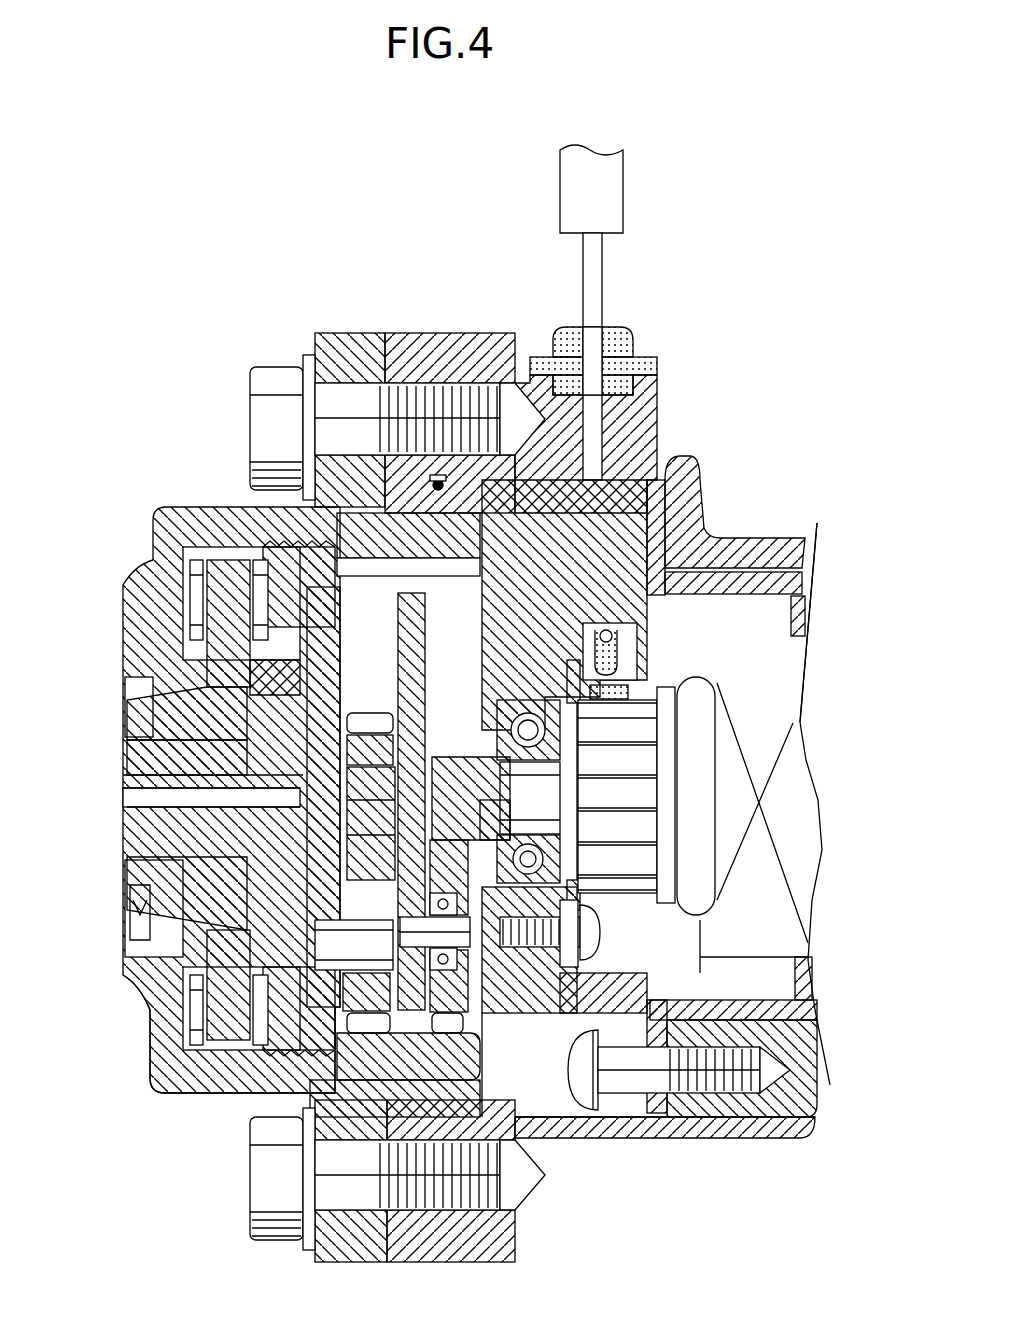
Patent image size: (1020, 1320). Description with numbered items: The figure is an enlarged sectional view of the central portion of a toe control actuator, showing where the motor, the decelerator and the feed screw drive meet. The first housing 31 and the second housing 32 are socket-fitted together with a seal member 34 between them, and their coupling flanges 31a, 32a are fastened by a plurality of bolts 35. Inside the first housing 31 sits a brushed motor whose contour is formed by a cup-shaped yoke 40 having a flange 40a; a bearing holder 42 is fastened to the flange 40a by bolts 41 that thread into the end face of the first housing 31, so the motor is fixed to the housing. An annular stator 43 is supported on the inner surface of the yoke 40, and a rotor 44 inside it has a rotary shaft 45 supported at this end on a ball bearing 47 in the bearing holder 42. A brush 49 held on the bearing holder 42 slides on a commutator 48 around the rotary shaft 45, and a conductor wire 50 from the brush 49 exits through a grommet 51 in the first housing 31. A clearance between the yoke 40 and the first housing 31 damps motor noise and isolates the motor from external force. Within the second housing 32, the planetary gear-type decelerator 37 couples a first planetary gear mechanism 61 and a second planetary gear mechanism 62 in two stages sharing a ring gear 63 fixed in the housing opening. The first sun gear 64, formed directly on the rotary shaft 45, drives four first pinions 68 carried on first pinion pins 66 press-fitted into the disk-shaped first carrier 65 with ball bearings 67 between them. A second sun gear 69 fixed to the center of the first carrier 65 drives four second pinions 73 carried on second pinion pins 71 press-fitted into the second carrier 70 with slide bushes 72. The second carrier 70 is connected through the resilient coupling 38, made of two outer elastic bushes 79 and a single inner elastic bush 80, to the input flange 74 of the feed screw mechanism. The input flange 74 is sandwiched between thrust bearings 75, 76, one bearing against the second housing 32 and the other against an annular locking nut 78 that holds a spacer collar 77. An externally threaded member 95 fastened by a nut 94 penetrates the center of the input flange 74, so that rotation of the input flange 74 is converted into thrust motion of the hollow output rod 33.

The first housing 31 is at (768, 528).
The coupling flange 31a is at (427, 343).
The second housing 32 is at (150, 538).
The coupling flange 32a is at (358, 343).
The output rod 33 is at (150, 940).
The seal member 34 is at (440, 480).
The bolt 35 is at (276, 365).
The planetary gear-type decelerator 37 is at (492, 1092).
The coupling 38 is at (265, 548).
The yoke 40 is at (746, 576).
The flange 40a is at (660, 480).
The bolt 41 is at (625, 1082).
The bearing holder 42 is at (484, 1074).
The stator 43 is at (793, 620).
The rotor 44 is at (795, 690).
The rotary shaft 45 is at (548, 810).
The ball bearing 47 is at (515, 712).
The commutator 48 is at (622, 882).
The brush 49 is at (630, 692).
The conductor wire 50 is at (602, 278).
The grommet 51 is at (625, 335).
The first planetary gear mechanism 61 is at (470, 993).
The second planetary gear mechanism 62 is at (368, 1040).
The ring gear 63 is at (435, 565).
The first sun gear 64 is at (450, 770).
The first carrier 65 is at (417, 678).
The first pinion pin 66 is at (536, 948).
The ball bearing 67 is at (448, 925).
The first pinion 68 is at (487, 848).
The second sun gear 69 is at (363, 730).
The second carrier 70 is at (318, 645).
The second pinion pin 71 is at (368, 956).
The slide bush 72 is at (378, 860).
The second pinion 73 is at (315, 1093).
The input flange 74 is at (200, 950).
The thrust bearing 75 is at (186, 592).
The thrust bearing 76 is at (305, 598).
The spacer collar 77 is at (193, 1048).
The locking nut 78 is at (250, 1042).
The outer elastic bush 79 is at (305, 664).
The inner elastic bush 80 is at (250, 680).
The nut 94 is at (135, 898).
The externally threaded member 95 is at (130, 835).